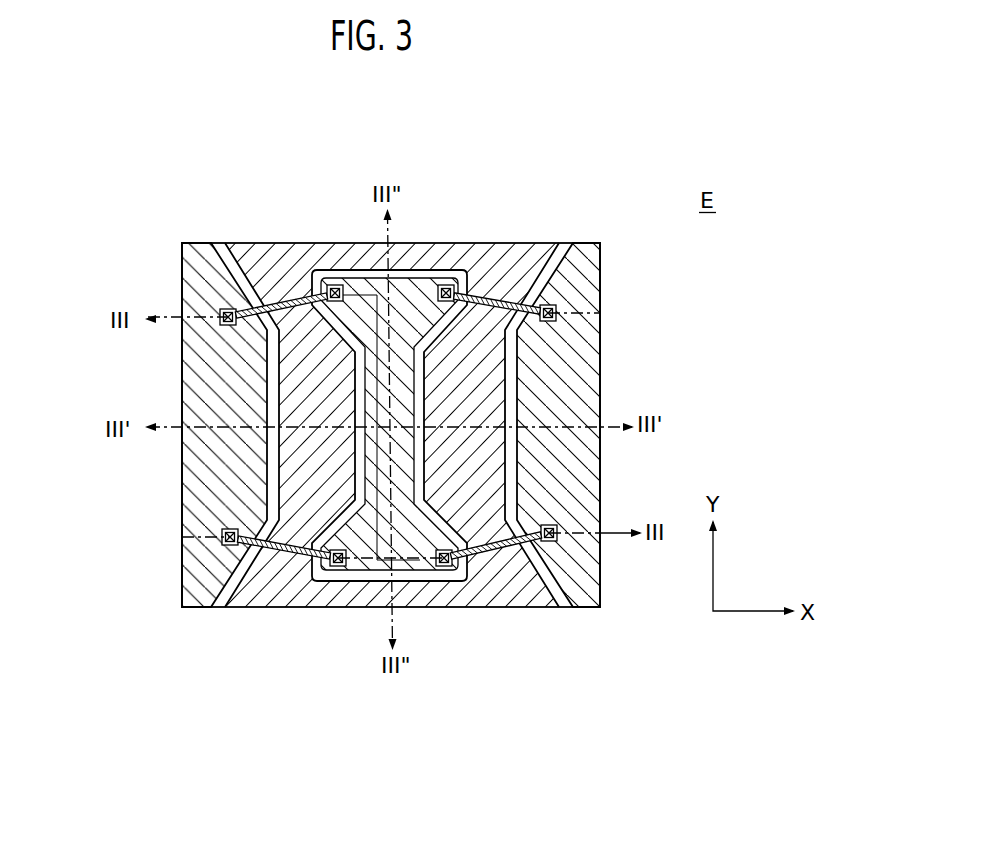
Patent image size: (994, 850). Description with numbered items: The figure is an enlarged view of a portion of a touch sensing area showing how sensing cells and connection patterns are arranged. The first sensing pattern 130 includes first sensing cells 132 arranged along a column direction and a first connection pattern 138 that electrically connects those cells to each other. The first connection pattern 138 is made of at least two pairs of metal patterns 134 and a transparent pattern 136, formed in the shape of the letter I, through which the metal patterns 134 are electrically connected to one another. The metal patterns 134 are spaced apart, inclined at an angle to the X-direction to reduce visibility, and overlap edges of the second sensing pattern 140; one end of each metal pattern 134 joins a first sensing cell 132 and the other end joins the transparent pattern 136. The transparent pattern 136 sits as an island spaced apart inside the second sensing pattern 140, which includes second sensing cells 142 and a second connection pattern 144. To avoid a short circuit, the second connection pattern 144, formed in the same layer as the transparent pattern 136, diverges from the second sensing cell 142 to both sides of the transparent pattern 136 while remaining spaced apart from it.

The first sensing pattern 130 is at (373, 750).
The first sensing cell 132 is at (193, 607).
The metal pattern 134 is at (265, 607).
The transparent pattern 136 is at (357, 607).
The first connection pattern 138 is at (370, 711).
The second sensing pattern 140 is at (57, 248).
The second sensing cell 142 is at (250, 267).
The second connection pattern 144 is at (297, 373).